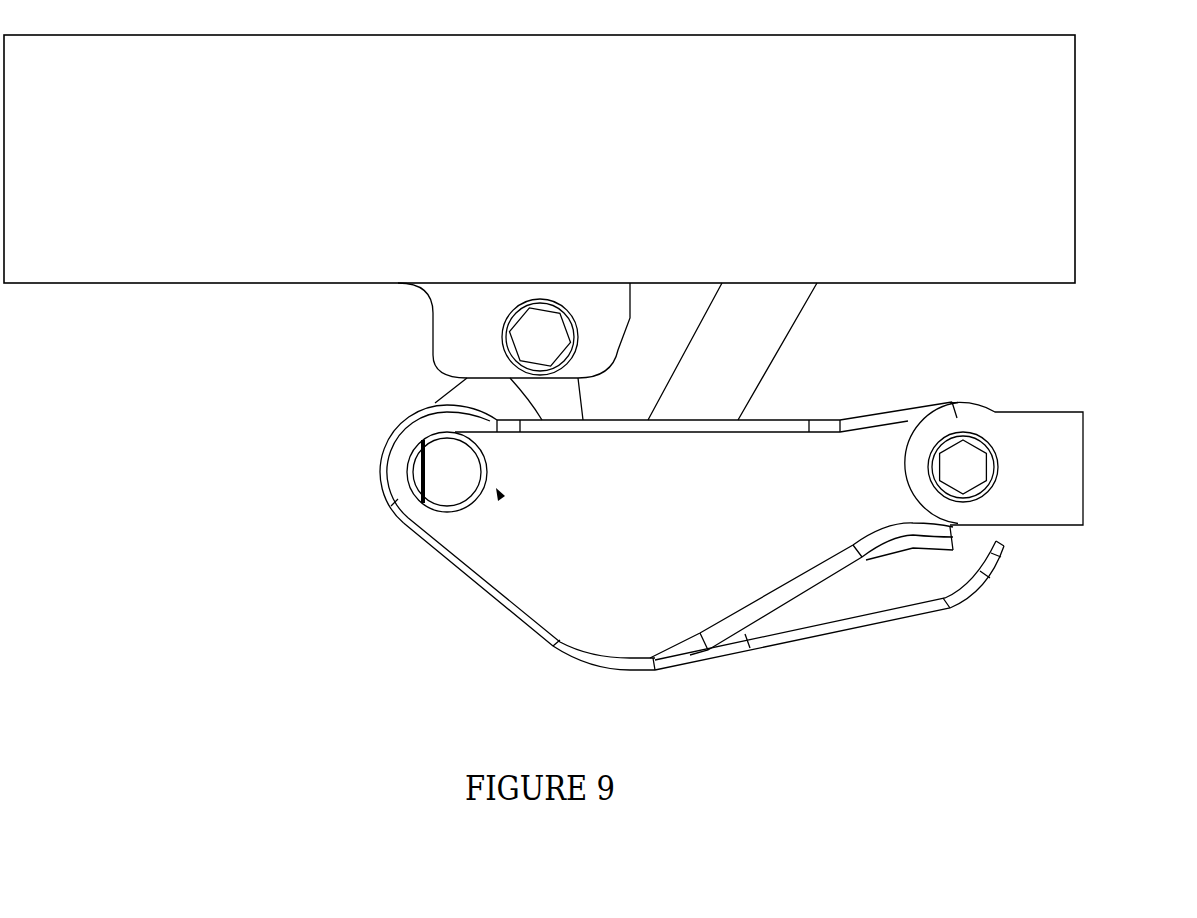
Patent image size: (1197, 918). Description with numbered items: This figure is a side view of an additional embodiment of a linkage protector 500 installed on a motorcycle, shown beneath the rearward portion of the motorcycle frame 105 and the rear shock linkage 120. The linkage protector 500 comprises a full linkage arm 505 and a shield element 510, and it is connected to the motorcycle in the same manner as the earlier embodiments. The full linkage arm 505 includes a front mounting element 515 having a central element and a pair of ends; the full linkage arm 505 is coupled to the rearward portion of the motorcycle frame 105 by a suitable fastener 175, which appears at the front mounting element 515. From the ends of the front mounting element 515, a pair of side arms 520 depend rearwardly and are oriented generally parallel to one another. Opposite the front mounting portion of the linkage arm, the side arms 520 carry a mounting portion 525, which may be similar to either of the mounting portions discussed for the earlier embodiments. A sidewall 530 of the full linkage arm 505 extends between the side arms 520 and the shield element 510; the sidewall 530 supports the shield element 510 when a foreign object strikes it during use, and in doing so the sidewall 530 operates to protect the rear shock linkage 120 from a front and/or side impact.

The motorcycle frame 105 is at (1063, 465).
The rear shock linkage 120 is at (768, 335).
The fastener 175 is at (965, 467).
The linkage protector 500 is at (670, 504).
The full linkage arm 505 is at (805, 408).
The shield element 510 is at (975, 605).
The front mounting element 515 is at (995, 457).
The side arms 520 is at (608, 473).
The mounting portion 525 is at (367, 418).
The sidewall 530 is at (683, 573).